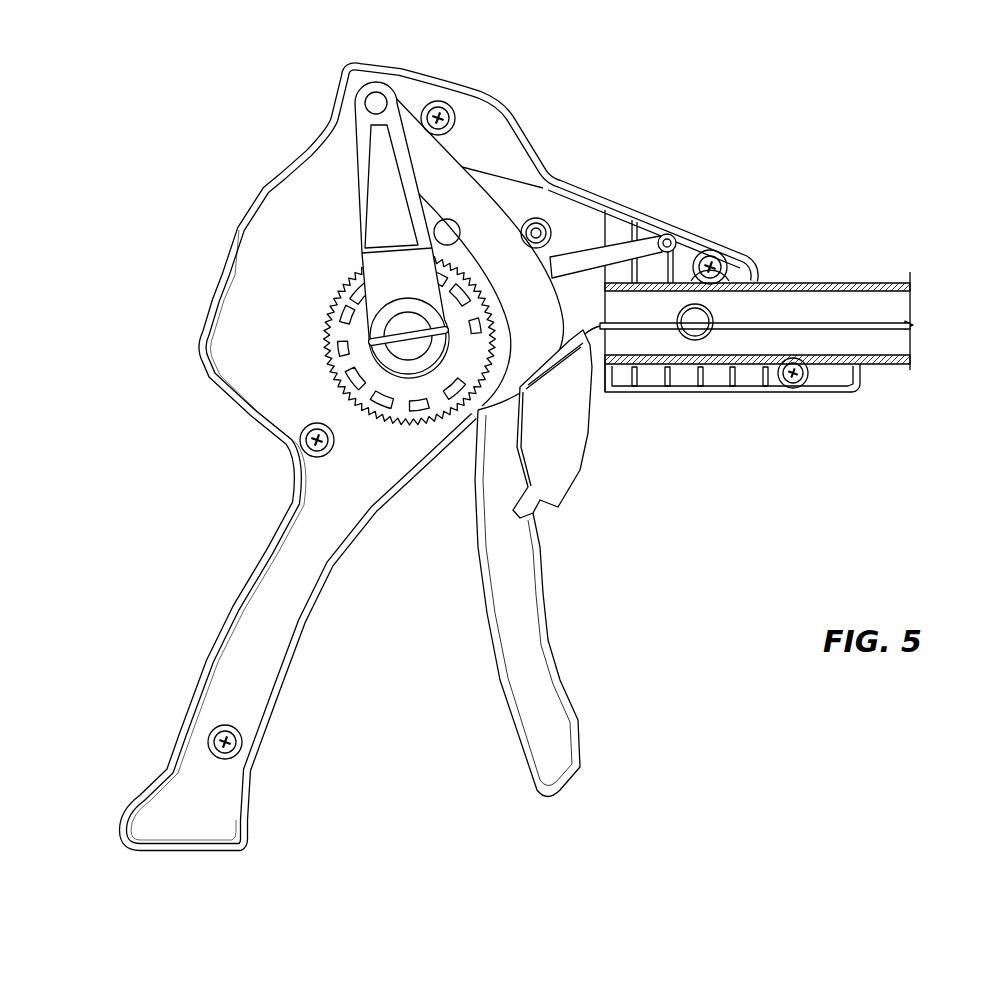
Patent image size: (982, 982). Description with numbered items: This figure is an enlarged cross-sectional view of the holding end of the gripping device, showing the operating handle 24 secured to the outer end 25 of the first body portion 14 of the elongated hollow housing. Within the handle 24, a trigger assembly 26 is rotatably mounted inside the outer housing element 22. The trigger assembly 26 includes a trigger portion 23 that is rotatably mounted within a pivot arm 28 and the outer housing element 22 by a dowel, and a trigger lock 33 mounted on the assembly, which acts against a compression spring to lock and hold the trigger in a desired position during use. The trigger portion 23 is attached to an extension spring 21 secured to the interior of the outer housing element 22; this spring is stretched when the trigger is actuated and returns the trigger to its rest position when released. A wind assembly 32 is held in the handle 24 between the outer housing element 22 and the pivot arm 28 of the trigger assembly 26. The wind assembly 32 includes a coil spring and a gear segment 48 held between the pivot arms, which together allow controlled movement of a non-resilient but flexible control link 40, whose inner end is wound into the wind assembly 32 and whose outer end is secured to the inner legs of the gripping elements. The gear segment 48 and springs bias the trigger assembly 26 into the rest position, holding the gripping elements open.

The first body portion 14 is at (883, 362).
The extension spring 21 is at (643, 245).
The outer housing element 22 is at (517, 122).
The trigger portion 23 is at (555, 648).
The operating handle 24 is at (648, 173).
The outer end 25 is at (810, 283).
The trigger assembly 26 is at (567, 553).
The pivot arm 28 is at (355, 185).
The wind assembly 32 is at (322, 372).
The trigger lock 33 is at (580, 422).
The control link 40 is at (860, 327).
The gear segment 48 is at (421, 390).